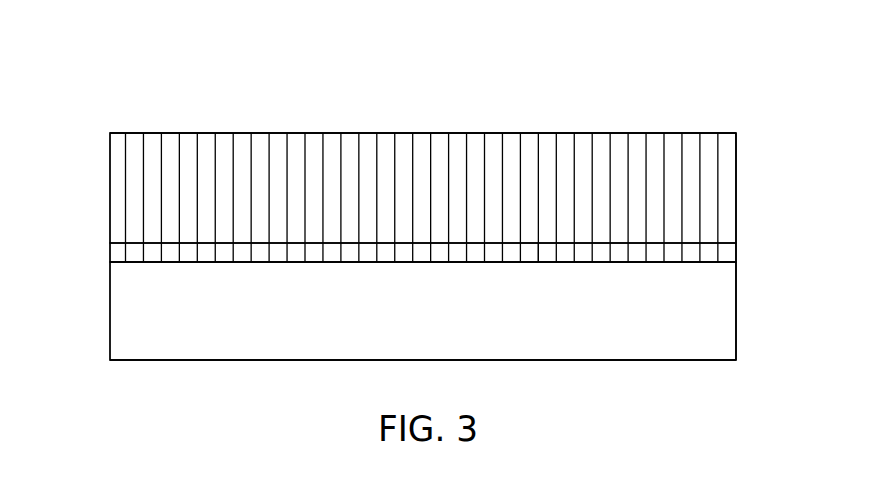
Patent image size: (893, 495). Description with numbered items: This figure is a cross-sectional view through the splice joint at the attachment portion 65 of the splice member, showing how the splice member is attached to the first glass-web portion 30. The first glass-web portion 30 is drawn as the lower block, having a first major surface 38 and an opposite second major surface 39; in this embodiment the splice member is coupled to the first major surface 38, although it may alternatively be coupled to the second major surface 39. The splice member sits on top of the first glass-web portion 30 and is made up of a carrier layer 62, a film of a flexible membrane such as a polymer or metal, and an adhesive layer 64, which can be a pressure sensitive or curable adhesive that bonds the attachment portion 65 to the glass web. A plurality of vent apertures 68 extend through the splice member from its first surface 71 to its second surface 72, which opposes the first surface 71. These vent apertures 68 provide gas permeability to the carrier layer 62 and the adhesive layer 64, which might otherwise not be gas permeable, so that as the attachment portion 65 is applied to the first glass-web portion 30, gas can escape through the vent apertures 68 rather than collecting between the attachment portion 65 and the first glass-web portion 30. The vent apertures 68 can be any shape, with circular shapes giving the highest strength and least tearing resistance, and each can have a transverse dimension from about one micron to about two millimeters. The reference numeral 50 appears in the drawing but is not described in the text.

The first glass-web portion 30 is at (541, 362).
The first major surface 38 is at (560, 218).
The second major surface 39 is at (423, 406).
The article 50 is at (423, 292).
The carrier layer 62 is at (130, 186).
The adhesive layer 64 is at (115, 254).
The attachment portion 65 is at (737, 193).
The vent apertures 68 is at (190, 141).
The first surface 71 is at (423, 87).
The second surface 72 is at (423, 308).